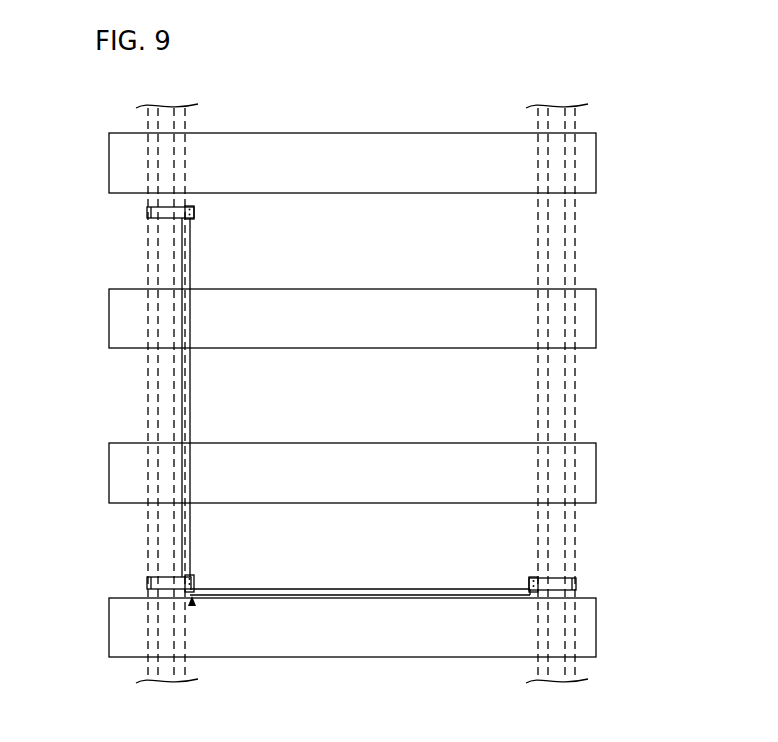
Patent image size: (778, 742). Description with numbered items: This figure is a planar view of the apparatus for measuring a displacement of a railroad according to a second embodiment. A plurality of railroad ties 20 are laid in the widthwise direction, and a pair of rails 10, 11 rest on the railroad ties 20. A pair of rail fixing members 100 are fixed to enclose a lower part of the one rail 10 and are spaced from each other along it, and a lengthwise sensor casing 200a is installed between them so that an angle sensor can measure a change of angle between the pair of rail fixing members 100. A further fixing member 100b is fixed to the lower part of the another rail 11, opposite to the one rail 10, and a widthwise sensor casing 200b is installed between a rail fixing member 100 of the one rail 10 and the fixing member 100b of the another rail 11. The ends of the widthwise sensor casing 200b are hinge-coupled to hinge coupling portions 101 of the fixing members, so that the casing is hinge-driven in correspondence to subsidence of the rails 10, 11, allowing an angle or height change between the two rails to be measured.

The rail 10 is at (148, 385).
The another rail 11 is at (565, 390).
The railroad tie 20 is at (128, 472).
The rail fixing member 100 is at (167, 215).
The bracket 100b is at (557, 582).
The fastening portion of bracket 101 is at (192, 605).
The lengthwise sensor casing 200a is at (191, 245).
The widthwise sensor casing 200b is at (371, 597).